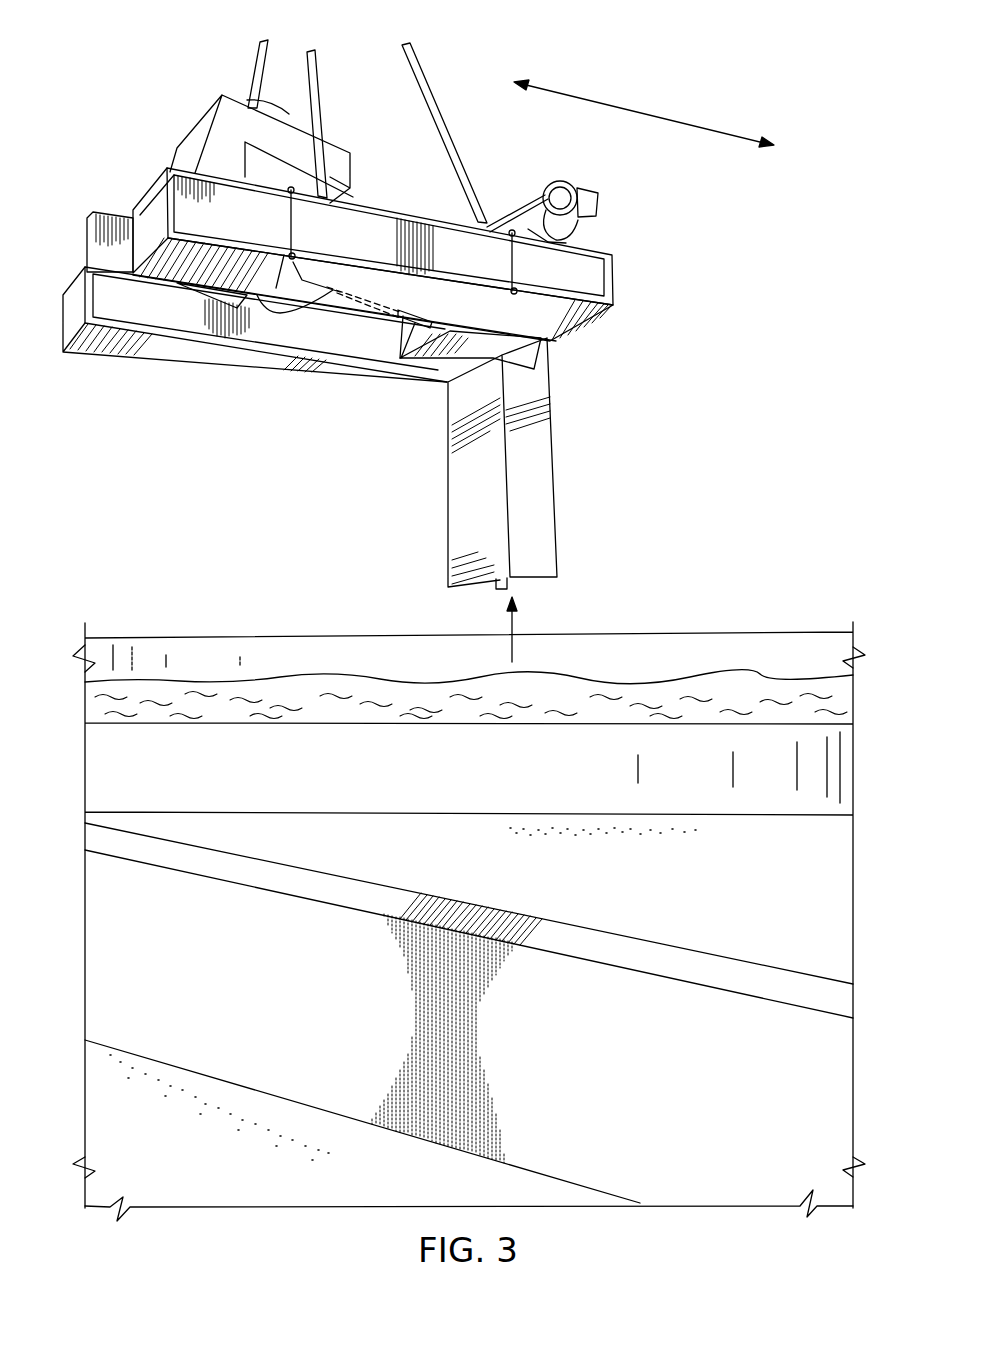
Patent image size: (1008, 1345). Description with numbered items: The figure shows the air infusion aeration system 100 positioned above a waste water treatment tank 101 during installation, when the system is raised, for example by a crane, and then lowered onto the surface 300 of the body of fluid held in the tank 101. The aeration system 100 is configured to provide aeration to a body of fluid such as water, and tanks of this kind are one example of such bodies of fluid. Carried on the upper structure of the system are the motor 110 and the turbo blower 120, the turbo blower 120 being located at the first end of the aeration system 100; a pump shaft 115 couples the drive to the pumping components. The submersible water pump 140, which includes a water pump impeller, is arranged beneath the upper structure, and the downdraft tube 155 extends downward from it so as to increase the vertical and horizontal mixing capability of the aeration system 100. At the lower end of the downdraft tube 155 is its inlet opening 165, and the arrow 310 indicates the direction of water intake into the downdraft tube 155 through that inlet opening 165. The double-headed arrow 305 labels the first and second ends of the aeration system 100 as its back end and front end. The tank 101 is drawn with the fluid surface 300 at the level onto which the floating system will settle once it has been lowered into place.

The air infusion aeration system 100 is at (180, 80).
The waste water treatment tank 101 is at (785, 648).
The motor 110 is at (203, 130).
The pump shaft 115 is at (404, 335).
The turbo blower 120 is at (279, 177).
The submersible water pump 140 is at (441, 365).
The downdraft tube 155 is at (543, 470).
The inlet opening 165 is at (543, 578).
The surface of the body of fluid 300 is at (705, 679).
The arrow indicating back and front ends 305 is at (643, 112).
The arrow indicating direction of water intake 310 is at (508, 657).